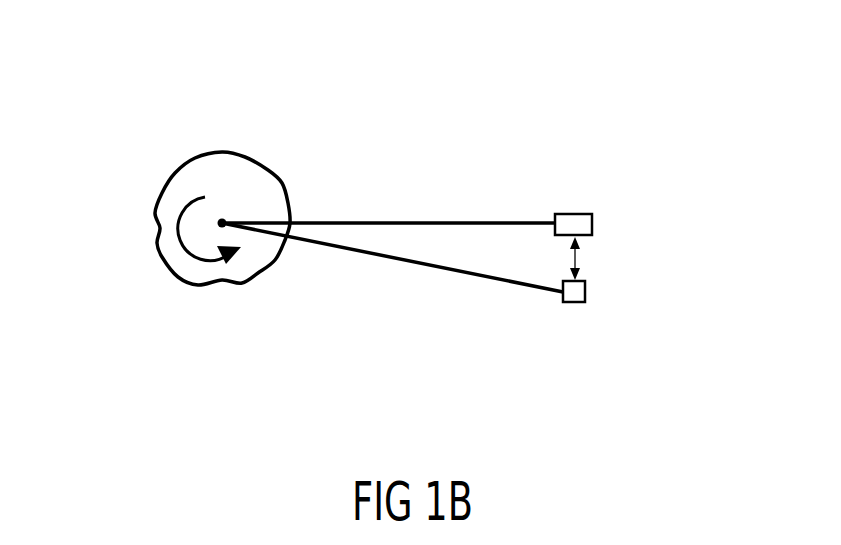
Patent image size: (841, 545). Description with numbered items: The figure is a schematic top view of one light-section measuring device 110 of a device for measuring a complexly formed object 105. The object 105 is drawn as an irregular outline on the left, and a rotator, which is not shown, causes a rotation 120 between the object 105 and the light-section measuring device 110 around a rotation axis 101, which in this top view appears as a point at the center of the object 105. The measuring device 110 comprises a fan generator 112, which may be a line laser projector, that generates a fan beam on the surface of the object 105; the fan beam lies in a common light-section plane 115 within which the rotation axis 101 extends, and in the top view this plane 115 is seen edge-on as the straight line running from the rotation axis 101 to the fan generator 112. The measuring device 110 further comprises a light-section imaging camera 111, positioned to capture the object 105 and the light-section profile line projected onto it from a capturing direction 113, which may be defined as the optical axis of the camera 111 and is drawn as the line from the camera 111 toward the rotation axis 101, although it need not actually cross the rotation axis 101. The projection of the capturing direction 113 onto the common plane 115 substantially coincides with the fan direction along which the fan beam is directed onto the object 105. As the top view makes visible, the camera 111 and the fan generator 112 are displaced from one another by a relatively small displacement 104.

The light-section measuring device 110 is at (105, 49).
The rotation axis 101 is at (221, 218).
The complexly formed object 105 is at (224, 283).
The rotation 120 is at (188, 226).
The common light-section plane 115 is at (388, 175).
The capturing direction 113 is at (426, 264).
The fan generator 112 is at (572, 213).
The light-section imaging camera 111 is at (574, 303).
The displacement 104 is at (580, 254).